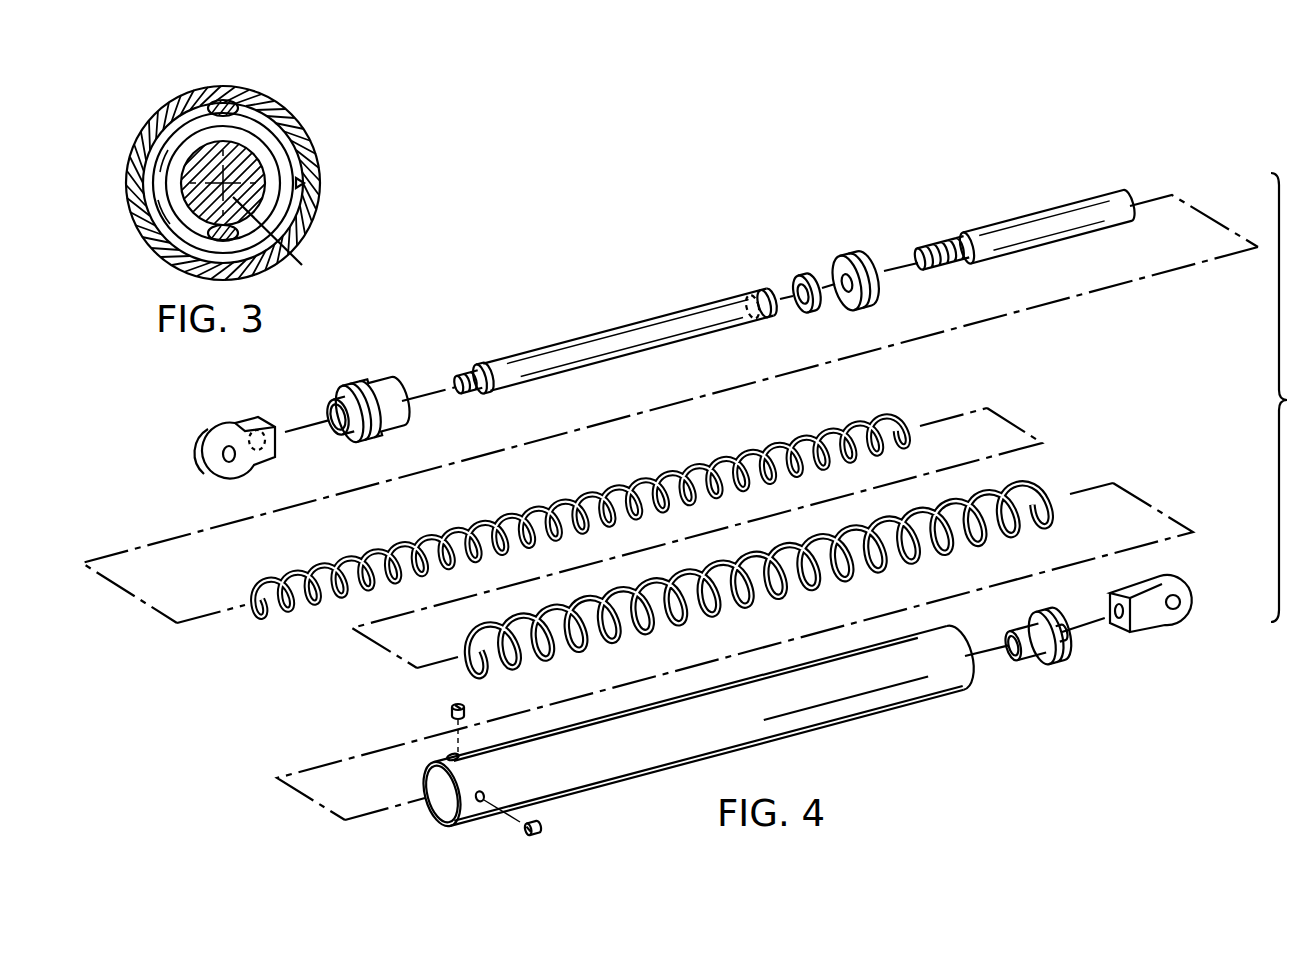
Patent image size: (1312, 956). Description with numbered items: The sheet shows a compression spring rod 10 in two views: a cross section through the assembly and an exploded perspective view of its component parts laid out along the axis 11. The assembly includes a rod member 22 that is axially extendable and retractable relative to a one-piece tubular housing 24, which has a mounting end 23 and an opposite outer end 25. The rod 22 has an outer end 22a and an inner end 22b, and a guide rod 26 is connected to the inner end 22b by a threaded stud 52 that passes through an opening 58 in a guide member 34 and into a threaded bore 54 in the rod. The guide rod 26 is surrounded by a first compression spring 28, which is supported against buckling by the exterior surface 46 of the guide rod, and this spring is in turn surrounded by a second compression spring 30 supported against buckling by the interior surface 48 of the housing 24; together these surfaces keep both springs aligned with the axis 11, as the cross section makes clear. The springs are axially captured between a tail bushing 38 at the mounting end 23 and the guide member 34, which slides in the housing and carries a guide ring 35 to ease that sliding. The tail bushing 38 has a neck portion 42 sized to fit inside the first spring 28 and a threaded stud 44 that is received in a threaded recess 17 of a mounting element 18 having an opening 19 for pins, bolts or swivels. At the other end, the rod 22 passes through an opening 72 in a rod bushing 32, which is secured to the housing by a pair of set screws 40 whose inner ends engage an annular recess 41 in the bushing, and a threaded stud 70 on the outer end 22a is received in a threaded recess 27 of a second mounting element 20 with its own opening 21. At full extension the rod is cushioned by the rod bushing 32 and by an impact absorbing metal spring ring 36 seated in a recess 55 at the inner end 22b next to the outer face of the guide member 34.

In FIG. 3, the compression spring rod 10 is at (357, 128).
In FIG. 4, the compression spring rod 10 is at (840, 183).
In FIG. 3, the axis 11 is at (277, 242).
In FIG. 4, the axis 11 is at (1148, 197).
In FIG. 4, the threaded recess 17 is at (1116, 607).
In FIG. 4, the mounting element 18 is at (1148, 625).
In FIG. 4, the opening 19 is at (1180, 603).
In FIG. 4, the mounting element 20 is at (197, 460).
In FIG. 4, the opening 21 is at (226, 459).
In FIG. 4, the rod member 22 is at (605, 329).
In FIG. 4, the outer end 22a is at (487, 365).
In FIG. 4, the inner end 22b is at (752, 290).
In FIG. 4, the mounting end 23 is at (953, 677).
In FIG. 3, the tubular housing 24 is at (322, 168).
In FIG. 4, the tubular housing 24 is at (685, 762).
In FIG. 4, the outer end 25 is at (463, 810).
In FIG. 3, the guide rod 26 is at (242, 140).
In FIG. 4, the guide rod 26 is at (1025, 203).
In FIG. 4, the threaded recess 27 is at (258, 451).
In FIG. 3, the first compression spring 28 is at (180, 157).
In FIG. 4, the first compression spring 28 is at (580, 500).
In FIG. 3, the second compression spring 30 is at (152, 203).
In FIG. 4, the second compression spring 30 is at (755, 562).
In FIG. 4, the rod bushing 32 is at (356, 404).
In FIG. 4, the guide member 34 is at (876, 268).
In FIG. 4, the guide ring 35 is at (875, 283).
In FIG. 4, the spring ring 36 is at (800, 272).
In FIG. 4, the tail bushing 38 is at (1068, 667).
In FIG. 4, the set screws 40 is at (447, 710).
In FIG. 4, the annular recess 41 is at (383, 428).
In FIG. 4, the neck portion 42 is at (1030, 650).
In FIG. 4, the threaded stud 44 is at (1077, 632).
In FIG. 3, the exterior surface 46 is at (190, 210).
In FIG. 4, the exterior surface 46 is at (1012, 218).
In FIG. 3, the interior surface 48 is at (304, 186).
In FIG. 4, the interior surface 48 is at (440, 793).
In FIG. 4, the threaded stud 52 is at (943, 245).
In FIG. 4, the threaded bore 54 is at (750, 312).
In FIG. 4, the recess 55 is at (768, 313).
In FIG. 4, the opening 58 is at (846, 292).
In FIG. 4, the threaded stud 70 is at (472, 393).
In FIG. 4, the opening 72 is at (342, 424).